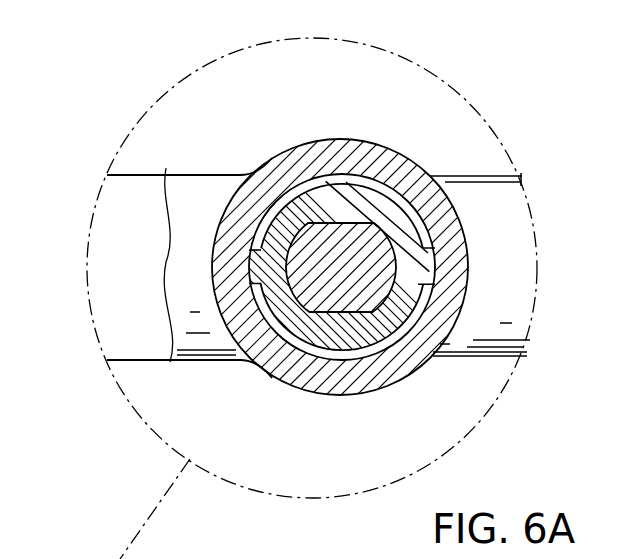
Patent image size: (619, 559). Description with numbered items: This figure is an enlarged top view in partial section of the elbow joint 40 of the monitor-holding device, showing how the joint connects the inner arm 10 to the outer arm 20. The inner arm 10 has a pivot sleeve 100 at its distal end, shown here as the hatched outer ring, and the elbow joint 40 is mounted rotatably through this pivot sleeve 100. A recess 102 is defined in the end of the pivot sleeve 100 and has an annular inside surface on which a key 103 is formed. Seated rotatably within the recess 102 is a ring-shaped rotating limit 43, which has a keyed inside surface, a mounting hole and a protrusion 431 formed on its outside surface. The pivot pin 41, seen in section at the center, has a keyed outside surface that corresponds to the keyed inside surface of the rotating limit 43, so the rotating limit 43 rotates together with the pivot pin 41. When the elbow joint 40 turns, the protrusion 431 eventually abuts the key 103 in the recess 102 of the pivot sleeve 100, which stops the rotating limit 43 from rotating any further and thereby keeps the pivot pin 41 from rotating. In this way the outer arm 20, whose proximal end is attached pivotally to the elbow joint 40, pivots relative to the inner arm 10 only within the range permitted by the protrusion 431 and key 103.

The inner arm 10 is at (505, 341).
The outer arm 20 is at (198, 180).
The elbow joint 40 is at (372, 355).
The pivot pin 41 is at (320, 238).
The rotating limit 43 is at (343, 198).
The protrusion 431 is at (437, 246).
The pivot sleeve 100 is at (328, 388).
The recess 102 is at (263, 312).
The key 103 is at (262, 249).